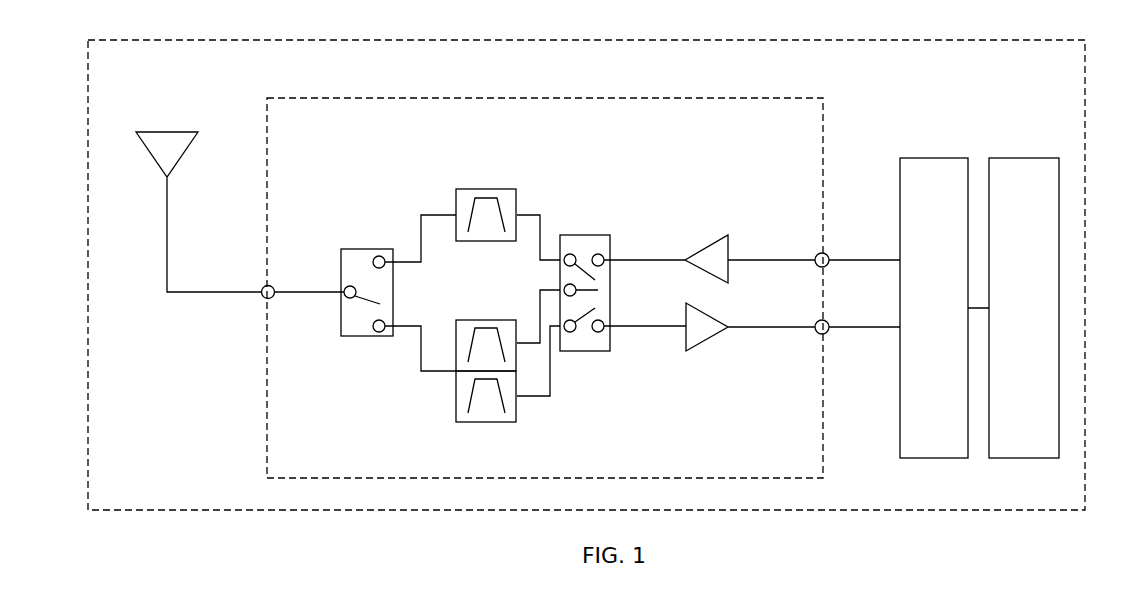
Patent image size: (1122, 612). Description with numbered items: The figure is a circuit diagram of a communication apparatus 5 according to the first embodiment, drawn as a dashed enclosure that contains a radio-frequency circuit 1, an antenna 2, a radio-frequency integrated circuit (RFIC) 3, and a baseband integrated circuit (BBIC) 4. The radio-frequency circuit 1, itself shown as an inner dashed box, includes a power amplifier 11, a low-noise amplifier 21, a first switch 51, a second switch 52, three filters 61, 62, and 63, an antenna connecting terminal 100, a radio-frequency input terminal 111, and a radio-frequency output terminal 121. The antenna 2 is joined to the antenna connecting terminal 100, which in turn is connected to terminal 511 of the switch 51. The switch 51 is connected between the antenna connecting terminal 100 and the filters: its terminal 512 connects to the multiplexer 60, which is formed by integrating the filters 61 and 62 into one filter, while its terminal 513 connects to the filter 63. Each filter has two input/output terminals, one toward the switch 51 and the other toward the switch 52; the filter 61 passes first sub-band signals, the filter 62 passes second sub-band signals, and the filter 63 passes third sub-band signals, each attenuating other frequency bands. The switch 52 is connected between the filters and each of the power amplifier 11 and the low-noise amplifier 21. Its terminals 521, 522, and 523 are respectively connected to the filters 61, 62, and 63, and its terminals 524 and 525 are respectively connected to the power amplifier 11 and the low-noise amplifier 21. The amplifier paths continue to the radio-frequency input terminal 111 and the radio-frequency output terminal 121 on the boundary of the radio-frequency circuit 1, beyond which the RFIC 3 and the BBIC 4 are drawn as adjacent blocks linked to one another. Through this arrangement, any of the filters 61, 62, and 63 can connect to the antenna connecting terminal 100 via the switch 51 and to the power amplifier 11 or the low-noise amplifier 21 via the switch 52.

The radio-frequency circuit 1 is at (785, 98).
The antenna 2 is at (170, 132).
The radio-frequency integrated circuit 3 is at (935, 158).
The baseband integrated circuit 4 is at (1020, 158).
The communication apparatus 5 is at (1045, 40).
The power amplifier 11 is at (711, 249).
The low-noise amplifier 21 is at (706, 316).
The switch 51 is at (368, 249).
The switch 52 is at (588, 234).
The multiplexer 60 is at (433, 391).
The filter 61 is at (485, 423).
The filter 62 is at (480, 319).
The filter 63 is at (478, 189).
The antenna connecting terminal 100 is at (272, 286).
The radio-frequency input terminal 111 is at (816, 255).
The radio-frequency output terminal 121 is at (816, 321).
The terminal 511 is at (341, 300).
The terminal 512 is at (374, 336).
The terminal 513 is at (384, 268).
The terminal 521 is at (575, 340).
The terminal 522 is at (563, 288).
The terminal 523 is at (568, 253).
The terminal 524 is at (604, 256).
The terminal 525 is at (604, 334).